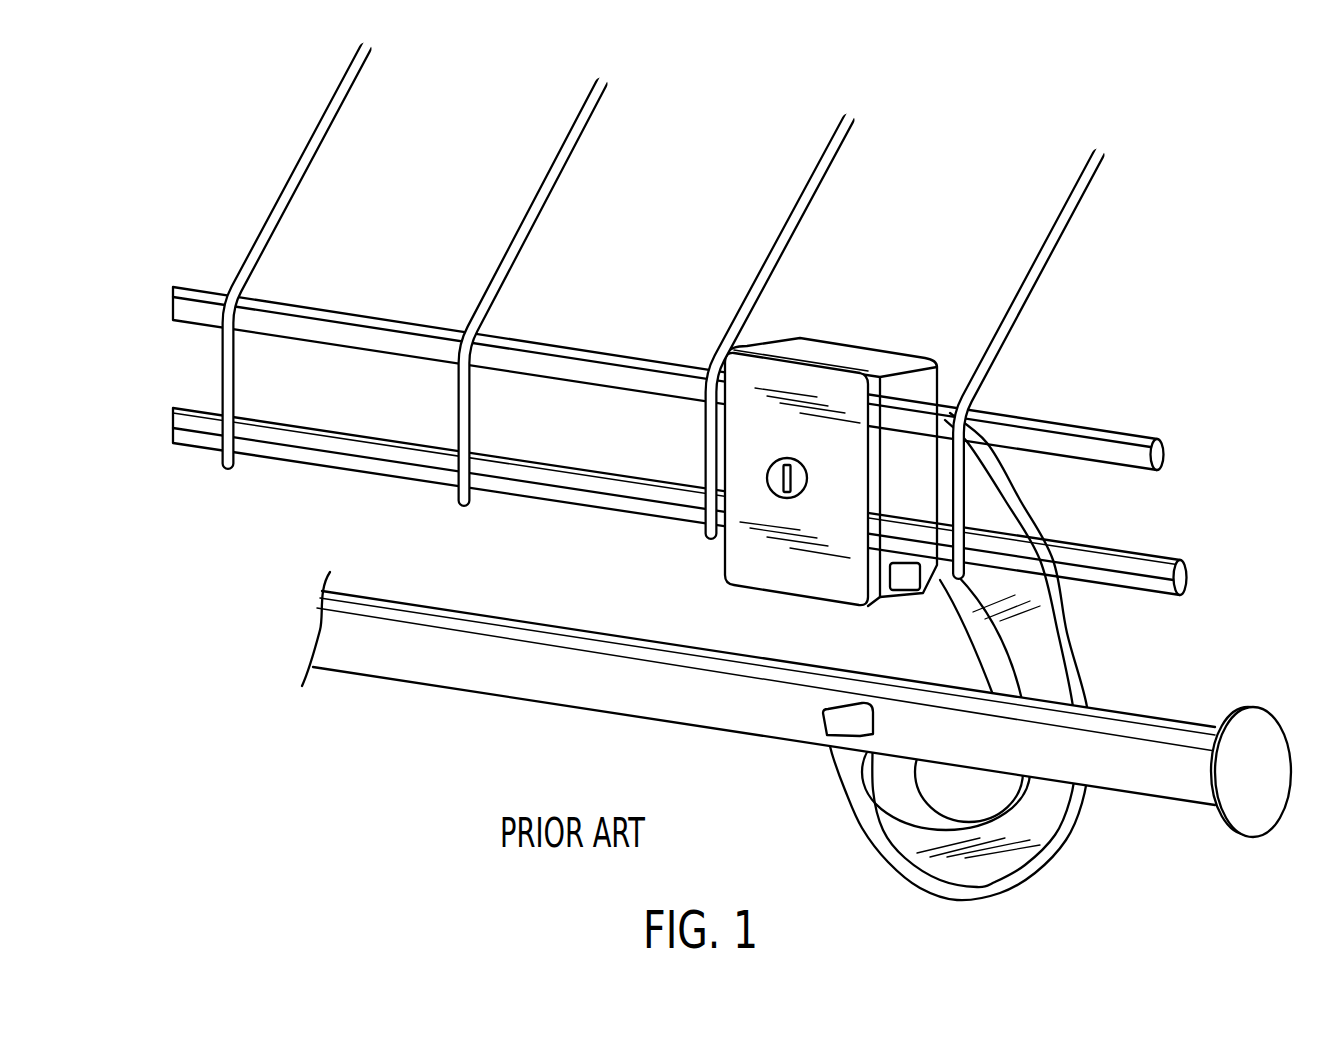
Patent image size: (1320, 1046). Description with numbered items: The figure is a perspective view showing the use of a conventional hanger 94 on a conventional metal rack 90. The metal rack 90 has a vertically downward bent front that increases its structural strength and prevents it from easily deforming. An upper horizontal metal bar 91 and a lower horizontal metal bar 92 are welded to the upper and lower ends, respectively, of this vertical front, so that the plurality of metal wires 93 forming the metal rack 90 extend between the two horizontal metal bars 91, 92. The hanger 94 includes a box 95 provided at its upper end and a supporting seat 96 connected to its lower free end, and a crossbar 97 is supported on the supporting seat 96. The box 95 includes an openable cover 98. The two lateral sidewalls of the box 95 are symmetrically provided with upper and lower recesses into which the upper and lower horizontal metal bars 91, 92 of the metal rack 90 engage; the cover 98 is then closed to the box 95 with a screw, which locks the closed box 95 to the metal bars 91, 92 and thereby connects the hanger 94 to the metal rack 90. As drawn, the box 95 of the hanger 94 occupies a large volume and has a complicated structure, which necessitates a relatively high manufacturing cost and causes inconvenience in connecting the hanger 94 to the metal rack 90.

The metal rack 90 is at (727, 308).
The upper horizontal metal bar 91 is at (1086, 435).
The lower horizontal metal bar 92 is at (310, 457).
The metal wires 93 is at (705, 447).
The hanger 94 is at (1045, 655).
The box 95 is at (776, 429).
The supporting seat 96 is at (823, 724).
The crossbar 97 is at (487, 683).
The openable cover 98 is at (740, 567).